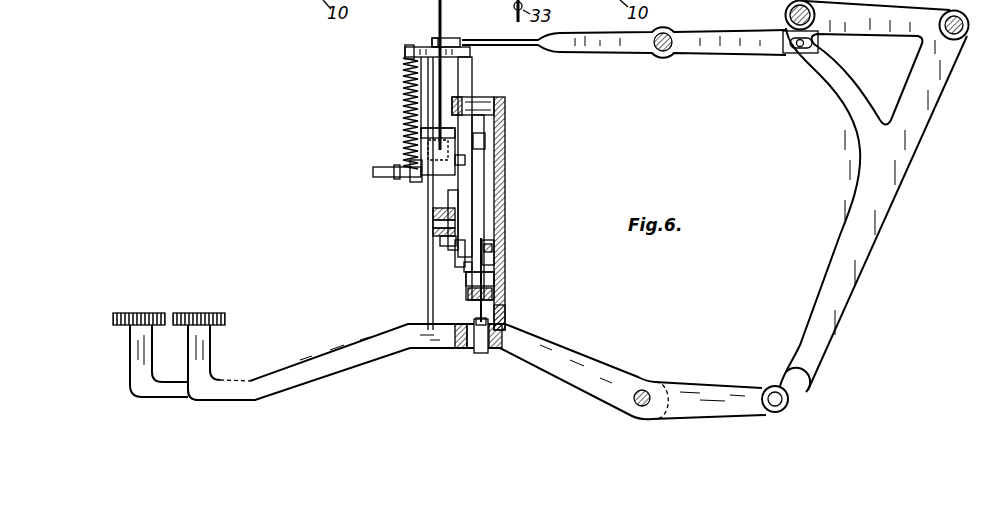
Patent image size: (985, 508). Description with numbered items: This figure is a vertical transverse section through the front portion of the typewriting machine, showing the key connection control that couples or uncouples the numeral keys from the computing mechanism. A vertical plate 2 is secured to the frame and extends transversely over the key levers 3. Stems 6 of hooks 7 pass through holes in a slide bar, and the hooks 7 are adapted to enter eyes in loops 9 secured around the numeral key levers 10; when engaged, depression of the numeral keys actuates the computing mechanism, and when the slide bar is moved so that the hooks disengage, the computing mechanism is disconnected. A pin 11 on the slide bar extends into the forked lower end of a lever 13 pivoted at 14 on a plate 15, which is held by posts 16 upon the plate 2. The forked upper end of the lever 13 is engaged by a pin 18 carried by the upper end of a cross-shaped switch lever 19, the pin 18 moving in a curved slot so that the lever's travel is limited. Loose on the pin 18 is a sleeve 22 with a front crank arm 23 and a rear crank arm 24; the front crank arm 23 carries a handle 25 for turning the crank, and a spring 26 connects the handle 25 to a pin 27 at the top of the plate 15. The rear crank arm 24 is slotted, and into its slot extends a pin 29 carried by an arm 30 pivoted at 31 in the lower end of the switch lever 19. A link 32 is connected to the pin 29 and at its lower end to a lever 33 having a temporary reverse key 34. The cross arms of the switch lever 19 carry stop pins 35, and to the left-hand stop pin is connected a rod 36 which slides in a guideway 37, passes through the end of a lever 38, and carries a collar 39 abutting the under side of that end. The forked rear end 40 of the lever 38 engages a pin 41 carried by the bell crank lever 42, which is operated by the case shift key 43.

The vertical plate 2 is at (505, 149).
The key levers 3 is at (319, 0).
The stems 6 is at (495, 272).
The hooks 7 is at (478, 320).
The loops 9 is at (503, 316).
The numeral key levers 10 is at (466, 350).
The pin 11 is at (466, 290).
The lever 13 is at (463, 275).
The pivot 14 is at (456, 259).
The plate 15 is at (473, 72).
The posts 16 is at (478, 100).
The pin 18 is at (481, 140).
The switch lever 19 is at (467, 206).
The sleeve 22 is at (438, 133).
The front crank arm 23 is at (412, 178).
The rear crank arm 24 is at (466, 159).
The handle 25 is at (390, 167).
The spring 26 is at (402, 93).
The pin 27 is at (418, 47).
The pin 29 is at (433, 210).
The arm 30 is at (434, 231).
The pivot 31 is at (448, 240).
The link 32 is at (428, 264).
The lever 33 is at (130, 348).
The temporary reverse key 34 is at (145, 312).
The stop pins 35 is at (433, 222).
The rod 36 is at (441, 98).
The guideway 37 is at (458, 33).
The lever 38 is at (503, 40).
The collar 39 is at (440, 40).
The forked rear end 40 is at (793, 56).
The pin 41 is at (814, 44).
The bell crank lever 42 is at (858, 90).
The case shift key 43 is at (226, 318).